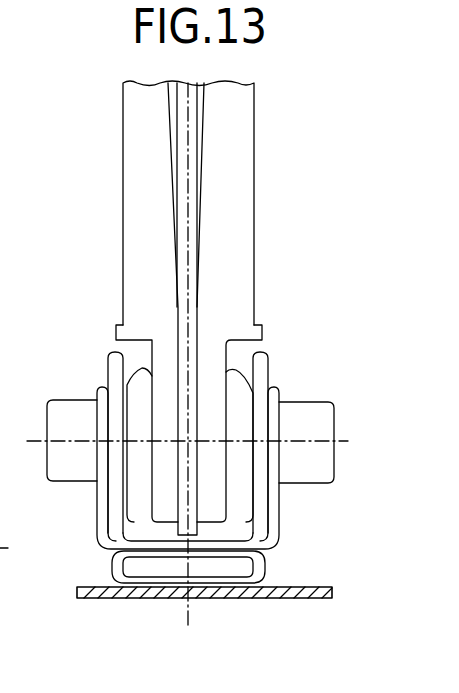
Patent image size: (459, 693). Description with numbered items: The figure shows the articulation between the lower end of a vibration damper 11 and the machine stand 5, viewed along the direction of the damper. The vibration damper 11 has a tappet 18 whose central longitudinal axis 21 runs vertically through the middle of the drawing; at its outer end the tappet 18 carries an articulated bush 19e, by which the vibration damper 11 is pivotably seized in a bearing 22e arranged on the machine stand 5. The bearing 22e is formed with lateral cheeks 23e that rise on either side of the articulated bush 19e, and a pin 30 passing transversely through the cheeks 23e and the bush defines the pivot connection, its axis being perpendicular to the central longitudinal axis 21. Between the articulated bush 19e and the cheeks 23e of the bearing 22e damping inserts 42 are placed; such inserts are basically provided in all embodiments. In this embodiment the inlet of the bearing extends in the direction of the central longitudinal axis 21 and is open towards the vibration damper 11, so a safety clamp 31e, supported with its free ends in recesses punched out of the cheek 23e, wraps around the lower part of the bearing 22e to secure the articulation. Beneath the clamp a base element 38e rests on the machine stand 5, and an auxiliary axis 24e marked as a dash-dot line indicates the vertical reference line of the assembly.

The vibration damper 11 is at (239, 200).
The tappet 18 is at (233, 173).
The central longitudinal axis 21 is at (188, 222).
The articulated bush 19e is at (253, 335).
The bearing 22e is at (201, 431).
The cheek 23e is at (118, 360).
The pin 30 is at (313, 456).
The damping inserts 42 is at (142, 492).
The safety clamp 31e is at (292, 544).
The base plate 38e is at (147, 551).
The axis 24e is at (194, 370).
The machine stand 5 is at (305, 599).